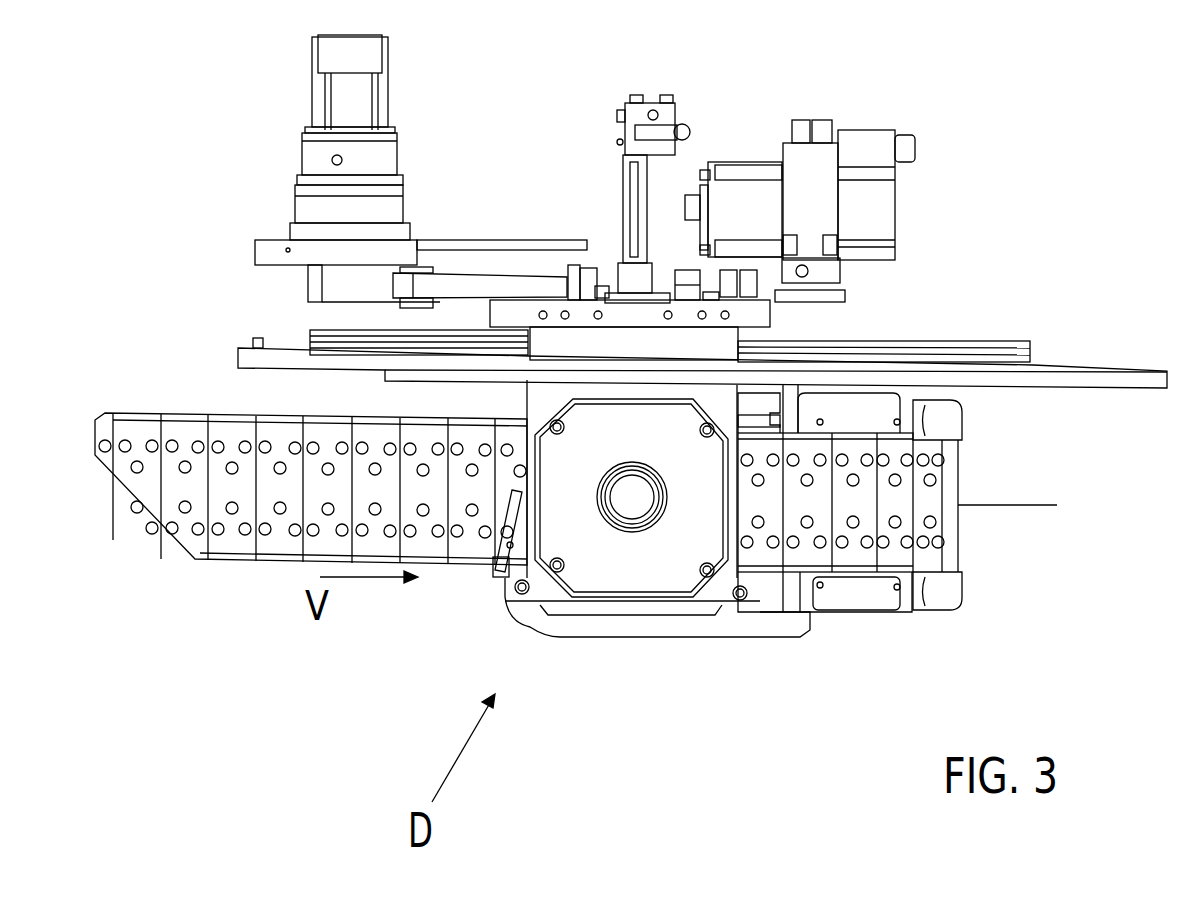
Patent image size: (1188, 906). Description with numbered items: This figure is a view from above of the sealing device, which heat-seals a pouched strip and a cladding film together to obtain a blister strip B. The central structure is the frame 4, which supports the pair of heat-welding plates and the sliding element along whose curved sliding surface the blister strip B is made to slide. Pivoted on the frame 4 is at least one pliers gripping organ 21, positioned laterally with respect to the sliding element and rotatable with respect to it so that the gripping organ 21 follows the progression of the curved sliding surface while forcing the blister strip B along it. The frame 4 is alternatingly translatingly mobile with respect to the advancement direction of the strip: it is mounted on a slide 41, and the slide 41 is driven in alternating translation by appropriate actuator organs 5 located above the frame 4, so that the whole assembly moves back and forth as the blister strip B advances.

The frame 4 is at (533, 397).
The actuator organs 5 is at (862, 292).
The pliers gripping organ 21 is at (882, 597).
The slide 41 is at (538, 315).
The blister strip B is at (908, 502).